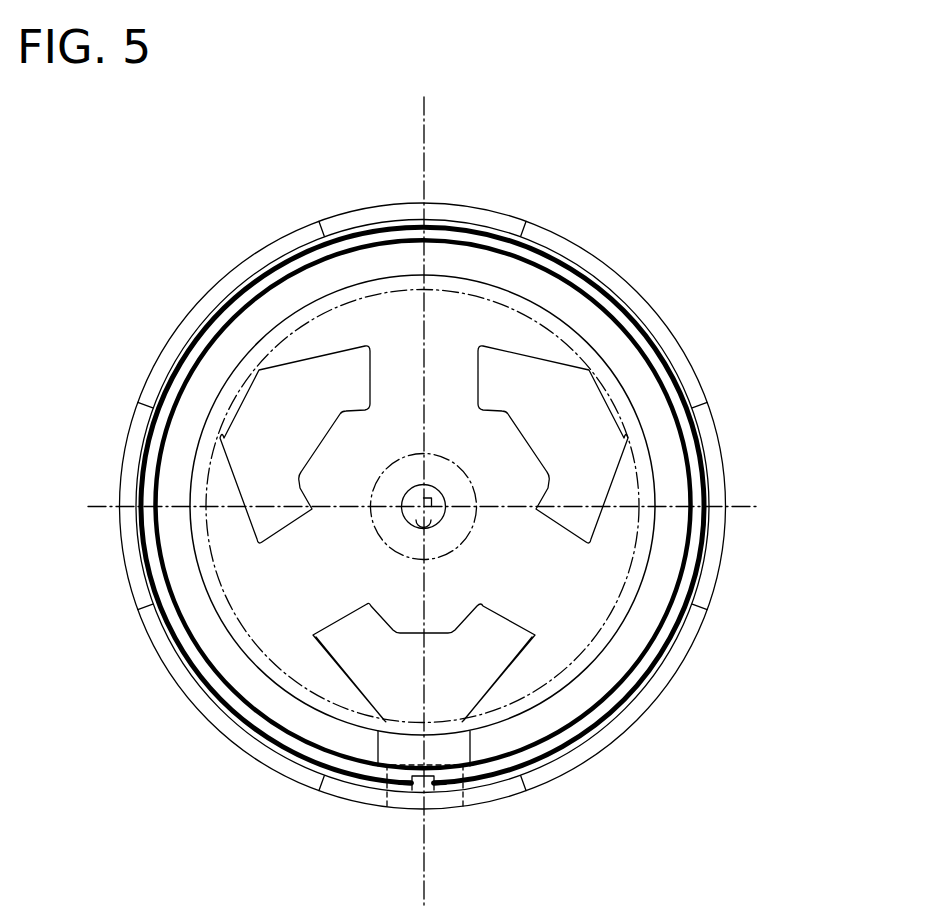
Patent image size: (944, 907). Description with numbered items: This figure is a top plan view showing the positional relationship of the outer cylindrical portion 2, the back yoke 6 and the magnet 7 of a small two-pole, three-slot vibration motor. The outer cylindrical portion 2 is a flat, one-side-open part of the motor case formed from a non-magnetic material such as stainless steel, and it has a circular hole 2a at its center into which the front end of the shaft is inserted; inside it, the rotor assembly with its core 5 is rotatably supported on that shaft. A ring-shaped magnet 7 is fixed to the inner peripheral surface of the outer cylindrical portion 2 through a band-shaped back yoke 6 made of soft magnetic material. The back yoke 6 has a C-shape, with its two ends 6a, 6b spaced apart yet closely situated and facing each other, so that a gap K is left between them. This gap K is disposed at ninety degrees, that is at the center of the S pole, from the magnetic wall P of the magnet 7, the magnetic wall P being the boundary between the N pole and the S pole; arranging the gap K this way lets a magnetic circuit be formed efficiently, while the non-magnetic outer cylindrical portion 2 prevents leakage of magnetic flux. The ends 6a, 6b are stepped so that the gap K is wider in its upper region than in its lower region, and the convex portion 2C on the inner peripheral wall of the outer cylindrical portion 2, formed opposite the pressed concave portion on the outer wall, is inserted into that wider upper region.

The outer cylindrical portion 2 is at (567, 240).
The circular hole 2a is at (426, 525).
The convex portion 2C is at (463, 797).
The core 5 is at (584, 627).
The back yoke 6 is at (641, 336).
The end of back yoke 6a is at (432, 787).
The end of back yoke 6b is at (416, 787).
The magnet 7 is at (474, 253).
The gap K is at (423, 789).
The magnetic wall P is at (173, 511).